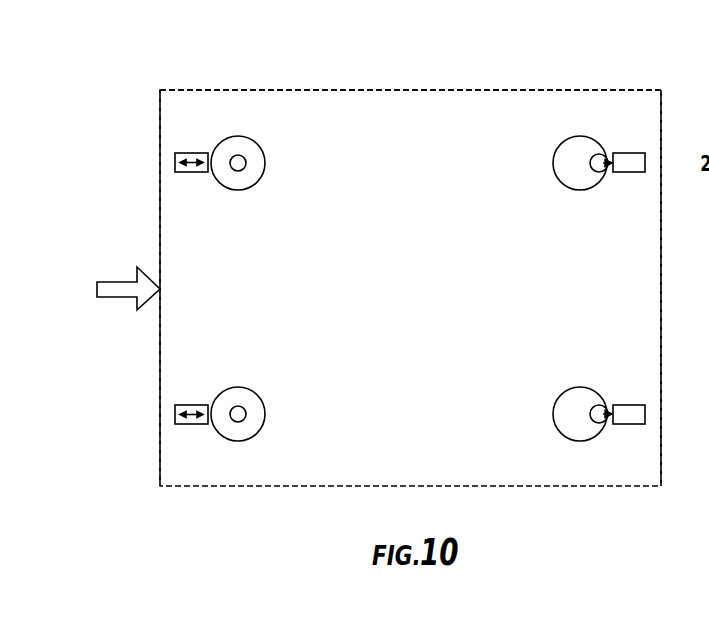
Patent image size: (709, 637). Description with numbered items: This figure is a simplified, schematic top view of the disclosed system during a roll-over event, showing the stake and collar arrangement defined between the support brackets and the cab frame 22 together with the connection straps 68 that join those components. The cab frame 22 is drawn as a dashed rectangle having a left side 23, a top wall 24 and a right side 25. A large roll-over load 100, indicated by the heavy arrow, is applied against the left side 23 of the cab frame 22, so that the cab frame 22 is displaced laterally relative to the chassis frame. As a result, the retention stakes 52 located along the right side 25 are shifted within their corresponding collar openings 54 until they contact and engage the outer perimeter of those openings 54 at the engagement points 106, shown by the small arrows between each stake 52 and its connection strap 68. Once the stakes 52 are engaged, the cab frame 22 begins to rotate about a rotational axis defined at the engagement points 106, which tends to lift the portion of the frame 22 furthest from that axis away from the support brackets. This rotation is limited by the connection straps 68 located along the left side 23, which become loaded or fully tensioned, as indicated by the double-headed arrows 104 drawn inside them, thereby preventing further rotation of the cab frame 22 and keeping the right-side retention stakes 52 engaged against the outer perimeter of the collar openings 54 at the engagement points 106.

The cab frame 22 is at (427, 487).
The left side 23 is at (160, 207).
The top wall 24 is at (440, 90).
The right side 25 is at (661, 302).
The retention stake 52 is at (246, 165).
The collar opening 54 is at (251, 139).
The connection strap 68 is at (189, 153).
The roll-over load 100 is at (118, 282).
The arrows 104 is at (187, 172).
The engagement point 106 is at (594, 156).